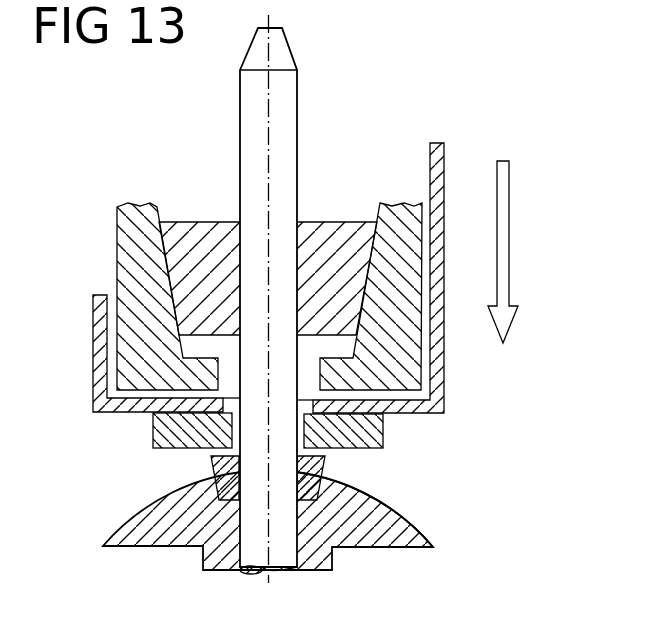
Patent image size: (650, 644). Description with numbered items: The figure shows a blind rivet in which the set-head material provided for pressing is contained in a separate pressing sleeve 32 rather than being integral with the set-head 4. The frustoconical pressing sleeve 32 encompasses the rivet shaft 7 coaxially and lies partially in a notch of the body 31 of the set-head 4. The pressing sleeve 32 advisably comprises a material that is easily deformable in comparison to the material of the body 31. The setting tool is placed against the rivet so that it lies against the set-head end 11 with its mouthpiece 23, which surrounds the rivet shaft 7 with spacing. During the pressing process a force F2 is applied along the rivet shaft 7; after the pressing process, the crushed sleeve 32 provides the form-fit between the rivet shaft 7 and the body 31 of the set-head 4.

The rivet shaft 7 is at (253, 138).
The set-head 4 is at (133, 519).
The body 31 is at (392, 533).
The mouthpiece 23 is at (383, 444).
The set-head end 11 is at (209, 456).
The pressing sleeve 32 is at (323, 465).
The force F2 is at (511, 226).